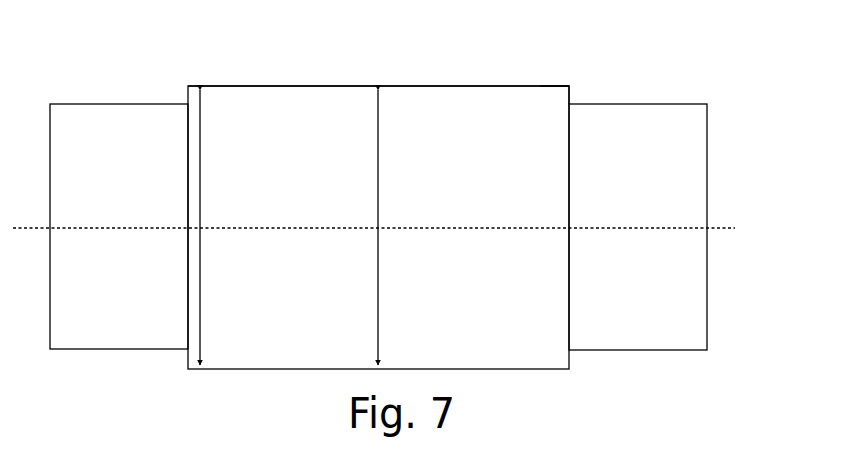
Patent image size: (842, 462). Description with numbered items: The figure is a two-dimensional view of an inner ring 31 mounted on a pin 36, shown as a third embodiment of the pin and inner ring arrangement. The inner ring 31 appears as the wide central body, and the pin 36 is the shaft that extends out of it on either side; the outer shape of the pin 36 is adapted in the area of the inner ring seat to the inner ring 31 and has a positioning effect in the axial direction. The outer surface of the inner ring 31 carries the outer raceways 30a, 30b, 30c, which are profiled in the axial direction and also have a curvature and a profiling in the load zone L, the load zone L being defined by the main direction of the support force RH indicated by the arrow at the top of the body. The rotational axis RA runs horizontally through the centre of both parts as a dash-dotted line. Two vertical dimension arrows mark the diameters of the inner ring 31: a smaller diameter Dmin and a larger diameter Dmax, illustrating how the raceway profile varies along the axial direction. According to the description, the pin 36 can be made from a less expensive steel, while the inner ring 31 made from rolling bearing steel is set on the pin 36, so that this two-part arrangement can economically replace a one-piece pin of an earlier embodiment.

The outer raceway on outer surface 30a is at (318, 84).
The middle raceway on outer surface 30b is at (385, 84).
The outer raceway on outer surface 30c is at (537, 82).
The inner ring 31 is at (540, 155).
The pin 36 is at (694, 333).
The load zone L is at (260, 81).
The main direction of support force RH is at (352, 61).
The minimum diameter Dmin is at (201, 178).
The maximum diameter Dmax is at (379, 178).
The rotational axis RA is at (612, 229).